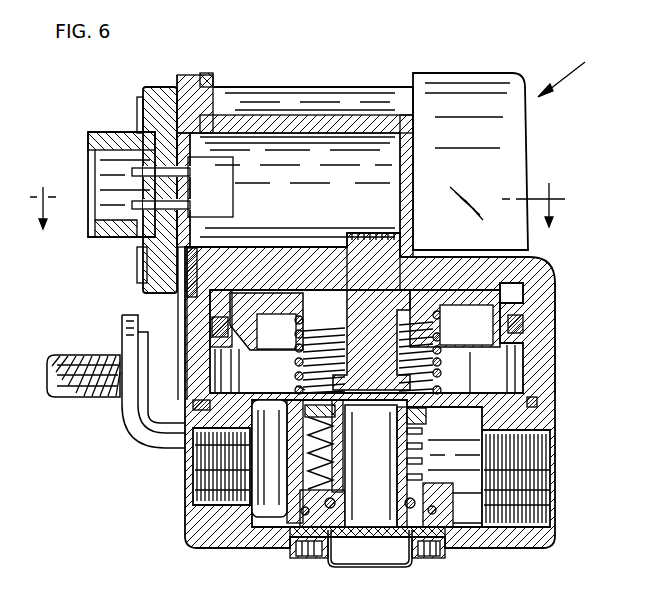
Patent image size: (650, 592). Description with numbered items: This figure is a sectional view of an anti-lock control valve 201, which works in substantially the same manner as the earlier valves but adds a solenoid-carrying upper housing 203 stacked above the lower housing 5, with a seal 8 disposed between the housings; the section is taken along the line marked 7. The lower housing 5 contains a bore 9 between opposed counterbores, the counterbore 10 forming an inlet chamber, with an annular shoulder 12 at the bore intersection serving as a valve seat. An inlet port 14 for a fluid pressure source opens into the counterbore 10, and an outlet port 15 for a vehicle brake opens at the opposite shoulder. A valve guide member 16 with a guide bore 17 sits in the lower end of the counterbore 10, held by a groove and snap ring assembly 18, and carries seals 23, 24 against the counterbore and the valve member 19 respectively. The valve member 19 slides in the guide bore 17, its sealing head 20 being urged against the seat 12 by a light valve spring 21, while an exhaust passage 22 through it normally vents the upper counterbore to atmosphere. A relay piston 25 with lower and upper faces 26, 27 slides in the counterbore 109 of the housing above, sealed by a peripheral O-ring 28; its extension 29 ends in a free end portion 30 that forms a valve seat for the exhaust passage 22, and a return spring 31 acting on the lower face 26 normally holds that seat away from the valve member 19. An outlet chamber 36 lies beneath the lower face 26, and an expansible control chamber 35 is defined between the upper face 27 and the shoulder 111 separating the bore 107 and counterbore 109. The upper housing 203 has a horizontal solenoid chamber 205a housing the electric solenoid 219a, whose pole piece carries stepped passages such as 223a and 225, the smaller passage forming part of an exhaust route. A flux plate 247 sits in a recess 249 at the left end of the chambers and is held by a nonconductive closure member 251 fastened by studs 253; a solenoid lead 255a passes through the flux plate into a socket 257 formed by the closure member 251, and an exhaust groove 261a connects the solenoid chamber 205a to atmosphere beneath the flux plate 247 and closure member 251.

The lower housing 5 is at (537, 548).
The section line 7- 7 is at (297, 194).
The seal 8 is at (540, 402).
The bore 9 is at (400, 412).
The counterbore 10 is at (312, 457).
The annular shoulder 12 is at (298, 396).
The inlet port 14 is at (205, 490).
The outlet port 15 is at (535, 527).
The valve guide member 16 is at (430, 488).
The guide bore 17 is at (403, 516).
The groove and snap ring assembly 18 is at (432, 548).
The valve member 19 is at (383, 506).
The sealing head 20 is at (405, 444).
The valve spring 21 is at (418, 447).
The exhaust passage 22 is at (405, 463).
The seal 23 is at (296, 515).
The seal 24 is at (367, 547).
The relay piston 25 is at (447, 332).
The lower side of relay piston 26 is at (237, 370).
The upper side of relay piston 27 is at (256, 320).
The peripheral seal 28 is at (522, 325).
The extension 29 is at (440, 360).
The free end portion 30 is at (284, 381).
The return spring 31 is at (447, 382).
The control chamber 35 is at (512, 298).
The outlet chamber 36 is at (508, 362).
The bore 107 is at (360, 280).
The counterbore 109 is at (538, 378).
The shoulder 111 is at (288, 285).
The control valve 201 is at (633, 72).
The upper housing 203 is at (515, 133).
The solenoid chamber 205a is at (331, 153).
The electric solenoid 219a is at (345, 197).
The stepped passage 223a is at (517, 585).
The stepped passage 225 is at (610, 591).
The flux plate 247 is at (183, 90).
The recess 249 is at (215, 105).
The closure member 251 is at (160, 97).
The studs 253 is at (140, 120).
The solenoid lead 255a is at (190, 172).
The socket 257 is at (122, 240).
The exhaust groove 261a is at (217, 110).